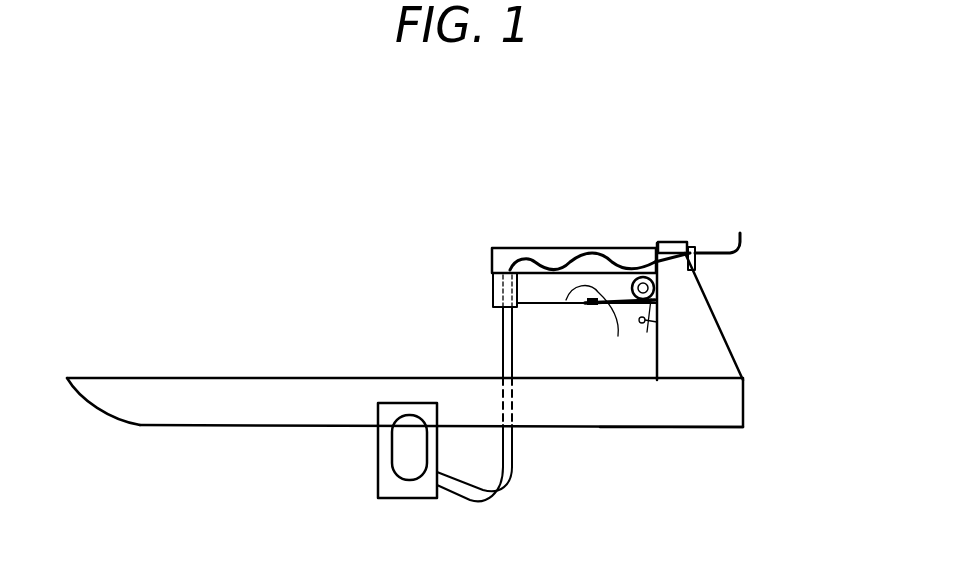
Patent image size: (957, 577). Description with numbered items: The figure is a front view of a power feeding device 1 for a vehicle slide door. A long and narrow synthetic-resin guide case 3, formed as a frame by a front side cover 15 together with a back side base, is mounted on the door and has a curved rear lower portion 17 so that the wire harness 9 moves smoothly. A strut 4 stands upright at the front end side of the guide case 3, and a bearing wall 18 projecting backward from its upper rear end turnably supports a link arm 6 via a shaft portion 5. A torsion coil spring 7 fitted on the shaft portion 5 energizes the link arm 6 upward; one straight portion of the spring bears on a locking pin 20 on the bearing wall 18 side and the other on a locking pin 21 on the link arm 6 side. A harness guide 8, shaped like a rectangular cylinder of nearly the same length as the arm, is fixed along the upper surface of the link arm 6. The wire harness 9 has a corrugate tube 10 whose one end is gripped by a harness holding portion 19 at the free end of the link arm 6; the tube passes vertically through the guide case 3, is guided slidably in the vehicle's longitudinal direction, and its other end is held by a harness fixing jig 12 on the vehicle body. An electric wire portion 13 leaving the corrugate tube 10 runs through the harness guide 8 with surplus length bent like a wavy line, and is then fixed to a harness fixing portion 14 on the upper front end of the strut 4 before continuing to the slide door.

The power feeding device 1 is at (382, 142).
The guide case 3 is at (305, 377).
The strut 4 is at (745, 360).
The shaft portion 5 is at (659, 297).
The link arm 6 is at (545, 283).
The torsion coil spring 7 is at (659, 284).
The harness guide 8 is at (555, 248).
The wire harness 9 is at (522, 489).
The corrugate tube 10 is at (500, 353).
The harness fixing jig 12 is at (377, 467).
The electric wire portion 13 is at (672, 242).
The harness fixing portion 14 is at (692, 247).
The front side cover 15 is at (615, 408).
The rear lower portion 17 is at (93, 410).
The bearing wall 18 is at (625, 313).
The harness holding portion 19 is at (493, 297).
The locking pin 20 is at (657, 327).
The locking pin 21 is at (568, 290).